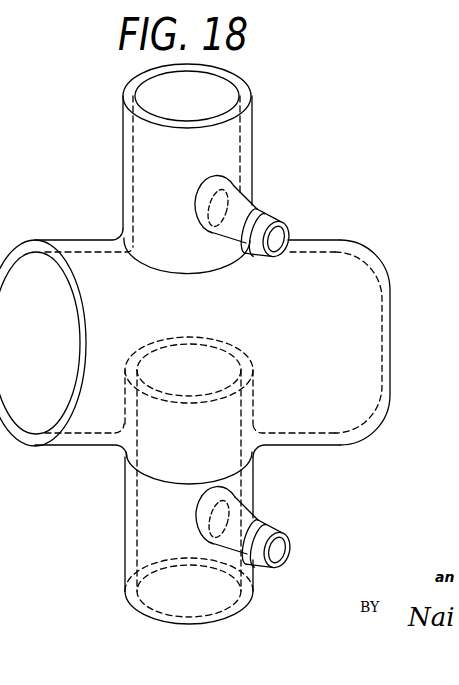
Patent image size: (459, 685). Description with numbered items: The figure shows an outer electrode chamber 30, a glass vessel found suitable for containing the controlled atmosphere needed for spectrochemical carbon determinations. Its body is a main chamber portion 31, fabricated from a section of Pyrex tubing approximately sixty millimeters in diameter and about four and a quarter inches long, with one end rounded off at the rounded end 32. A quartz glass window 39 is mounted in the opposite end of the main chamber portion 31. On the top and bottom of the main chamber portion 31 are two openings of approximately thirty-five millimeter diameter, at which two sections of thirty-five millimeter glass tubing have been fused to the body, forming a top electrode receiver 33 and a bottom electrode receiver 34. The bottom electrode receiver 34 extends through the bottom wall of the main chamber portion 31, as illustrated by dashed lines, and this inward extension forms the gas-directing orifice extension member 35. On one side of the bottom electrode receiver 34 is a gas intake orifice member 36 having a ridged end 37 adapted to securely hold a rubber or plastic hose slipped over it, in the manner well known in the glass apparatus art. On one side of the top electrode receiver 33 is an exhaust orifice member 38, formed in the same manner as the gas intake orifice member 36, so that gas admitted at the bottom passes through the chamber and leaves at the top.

The outer electrode chamber 30 is at (78, 233).
The main chamber portion 31 is at (187, 356).
The rounded end 32 is at (380, 278).
The top electrode receiver 33 is at (187, 155).
The bottom electrode receiver 34 is at (189, 480).
The gas-directing orifice extension member 35 is at (177, 338).
The gas intake orifice member 36 is at (255, 520).
The ridged end 37 is at (268, 572).
The exhaust orifice member 38 is at (236, 229).
The quartz glass window 39 is at (43, 343).